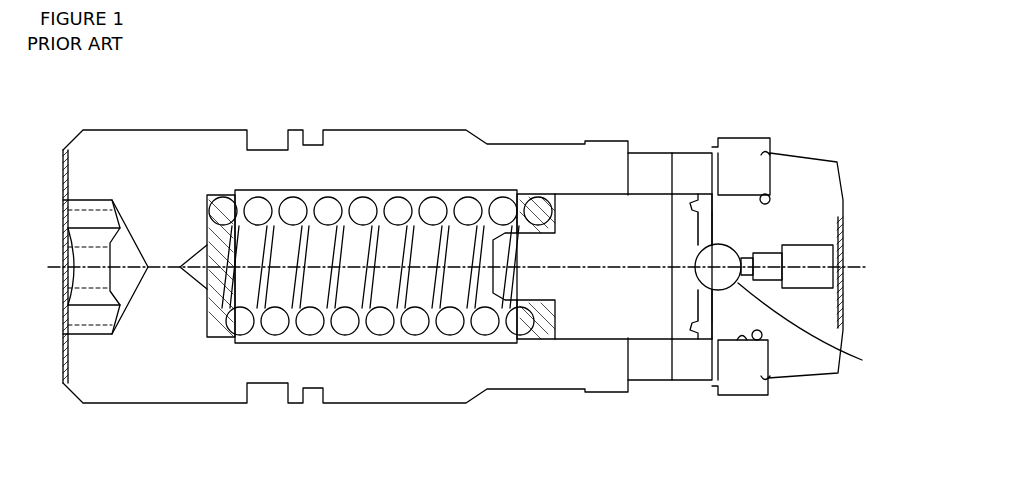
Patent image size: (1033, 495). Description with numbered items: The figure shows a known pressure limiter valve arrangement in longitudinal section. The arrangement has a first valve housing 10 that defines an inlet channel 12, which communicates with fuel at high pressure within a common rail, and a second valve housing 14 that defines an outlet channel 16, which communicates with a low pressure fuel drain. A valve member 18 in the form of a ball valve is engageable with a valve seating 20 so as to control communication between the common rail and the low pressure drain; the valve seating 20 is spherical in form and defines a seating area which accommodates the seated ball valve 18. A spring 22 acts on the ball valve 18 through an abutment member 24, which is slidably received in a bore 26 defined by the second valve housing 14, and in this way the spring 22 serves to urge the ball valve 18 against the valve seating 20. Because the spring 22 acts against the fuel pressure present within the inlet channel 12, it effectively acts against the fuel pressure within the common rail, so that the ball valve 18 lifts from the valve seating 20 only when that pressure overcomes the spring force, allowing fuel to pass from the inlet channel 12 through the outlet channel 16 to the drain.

The first valve housing 10 is at (800, 211).
The inlet channel 12 is at (812, 275).
The second valve housing 14 is at (727, 165).
The outlet channel 16 is at (688, 175).
The valve member 18 is at (732, 437).
The valve seating 20 is at (737, 243).
The spring 22 is at (327, 210).
The abutment member 24 is at (593, 308).
The bore 26 is at (626, 198).